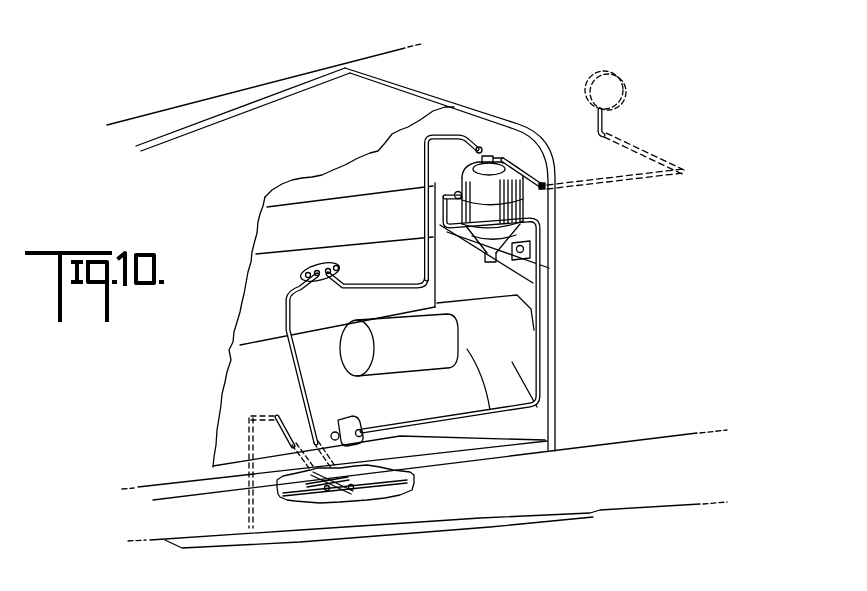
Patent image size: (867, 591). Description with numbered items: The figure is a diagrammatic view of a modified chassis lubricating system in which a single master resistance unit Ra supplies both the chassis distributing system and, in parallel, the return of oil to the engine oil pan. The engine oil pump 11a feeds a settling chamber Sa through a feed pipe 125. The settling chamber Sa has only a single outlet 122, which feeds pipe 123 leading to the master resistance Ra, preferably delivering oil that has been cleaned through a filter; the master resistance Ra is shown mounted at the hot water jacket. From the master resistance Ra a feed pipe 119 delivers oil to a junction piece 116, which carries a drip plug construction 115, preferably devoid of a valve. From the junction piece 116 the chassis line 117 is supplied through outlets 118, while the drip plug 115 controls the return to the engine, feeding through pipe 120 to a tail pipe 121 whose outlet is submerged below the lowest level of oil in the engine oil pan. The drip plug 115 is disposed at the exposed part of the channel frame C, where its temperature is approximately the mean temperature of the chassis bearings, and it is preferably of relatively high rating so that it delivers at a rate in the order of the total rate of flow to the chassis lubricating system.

The drip plug construction 115 is at (318, 484).
The junction piece 116 is at (343, 488).
The chassis line 117 is at (295, 502).
The outlets 118 is at (323, 478).
The feed pipe 119 is at (287, 320).
The pipe 120 is at (285, 430).
The tail pipe 121 is at (248, 428).
The outlet 122 is at (482, 147).
The pipe 123 is at (418, 128).
The feed pipe 125 is at (536, 329).
The master resistance unit Ra is at (327, 260).
The settling chamber Sa is at (520, 204).
The engine oil pump 11a is at (355, 421).
The channel frame C is at (430, 493).